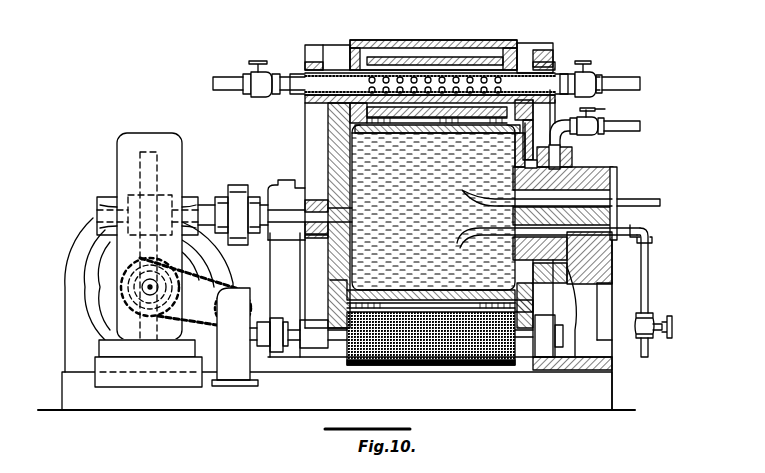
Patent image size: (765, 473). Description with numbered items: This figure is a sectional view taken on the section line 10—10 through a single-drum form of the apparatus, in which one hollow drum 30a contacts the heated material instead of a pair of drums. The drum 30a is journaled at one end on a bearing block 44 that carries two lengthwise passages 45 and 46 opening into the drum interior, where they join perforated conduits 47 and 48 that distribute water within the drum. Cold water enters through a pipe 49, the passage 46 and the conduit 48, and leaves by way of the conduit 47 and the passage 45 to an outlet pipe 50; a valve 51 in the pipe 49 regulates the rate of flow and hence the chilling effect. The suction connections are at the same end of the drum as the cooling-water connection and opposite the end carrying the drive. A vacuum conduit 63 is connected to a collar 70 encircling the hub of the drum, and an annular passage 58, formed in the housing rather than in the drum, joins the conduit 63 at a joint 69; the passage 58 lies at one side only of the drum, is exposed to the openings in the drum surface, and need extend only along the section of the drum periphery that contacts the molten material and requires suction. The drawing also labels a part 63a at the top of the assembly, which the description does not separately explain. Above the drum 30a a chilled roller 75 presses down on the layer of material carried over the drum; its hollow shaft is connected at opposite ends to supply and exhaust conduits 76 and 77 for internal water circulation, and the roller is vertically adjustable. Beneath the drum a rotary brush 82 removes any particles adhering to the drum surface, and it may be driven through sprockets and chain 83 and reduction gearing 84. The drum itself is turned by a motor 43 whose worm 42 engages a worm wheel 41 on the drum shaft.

The developing apparatus 10 is at (336, 205).
The drum 30a is at (358, 284).
The worm wheel 41 is at (140, 165).
The worm 42 is at (135, 287).
The motor 43 is at (68, 264).
The bearing block 44 is at (595, 200).
The passage 45 is at (617, 185).
The passage 46 is at (598, 257).
The conduit 47 is at (462, 197).
The conduit 48 is at (458, 232).
The pipe 49 is at (648, 288).
The outlet pipe 50 is at (660, 202).
The valve 51 is at (673, 328).
The annular passage 58 is at (525, 165).
The vacuum conduit 63 is at (640, 128).
The heating chamber 63a is at (457, 42).
The joint 69 is at (578, 175).
The collar 70 is at (575, 160).
The roller 75 is at (503, 45).
The supply conduit 76 is at (622, 84).
The exhaust conduit 77 is at (226, 80).
The rotary brush 82 is at (437, 366).
The sprockets and chain 83 is at (165, 320).
The reduction gearing 84 is at (233, 368).